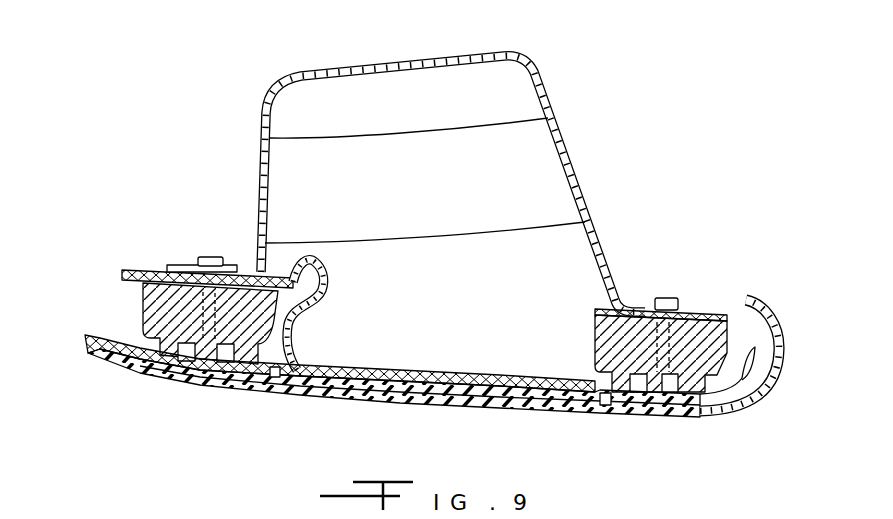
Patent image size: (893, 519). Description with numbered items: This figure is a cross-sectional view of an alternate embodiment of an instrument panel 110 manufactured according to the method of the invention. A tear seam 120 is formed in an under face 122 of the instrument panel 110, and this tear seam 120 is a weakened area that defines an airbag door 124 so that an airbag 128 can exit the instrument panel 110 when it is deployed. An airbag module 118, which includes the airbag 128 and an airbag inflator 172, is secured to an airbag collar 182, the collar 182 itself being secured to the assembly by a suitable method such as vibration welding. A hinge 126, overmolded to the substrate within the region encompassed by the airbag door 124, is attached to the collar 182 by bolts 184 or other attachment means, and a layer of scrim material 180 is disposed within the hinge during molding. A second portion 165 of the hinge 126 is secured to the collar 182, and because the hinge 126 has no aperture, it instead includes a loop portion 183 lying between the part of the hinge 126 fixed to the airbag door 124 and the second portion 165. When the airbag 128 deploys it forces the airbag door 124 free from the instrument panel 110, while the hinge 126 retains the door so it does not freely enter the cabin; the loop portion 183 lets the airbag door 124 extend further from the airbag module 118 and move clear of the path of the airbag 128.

The instrument panel 110 is at (466, 347).
The airbag module 118 is at (410, 170).
The tear seam 120 is at (277, 378).
The under face 122 is at (740, 378).
The airbag door 124 is at (467, 387).
The hinge 126 is at (420, 360).
The airbag 128 is at (525, 182).
The second portion of the hinge 165 is at (152, 268).
The airbag inflator 172 is at (497, 90).
The scrim material 180 is at (122, 270).
The airbag collar 182 is at (140, 312).
The loop portion 183 is at (326, 268).
The bolts 184 is at (212, 258).